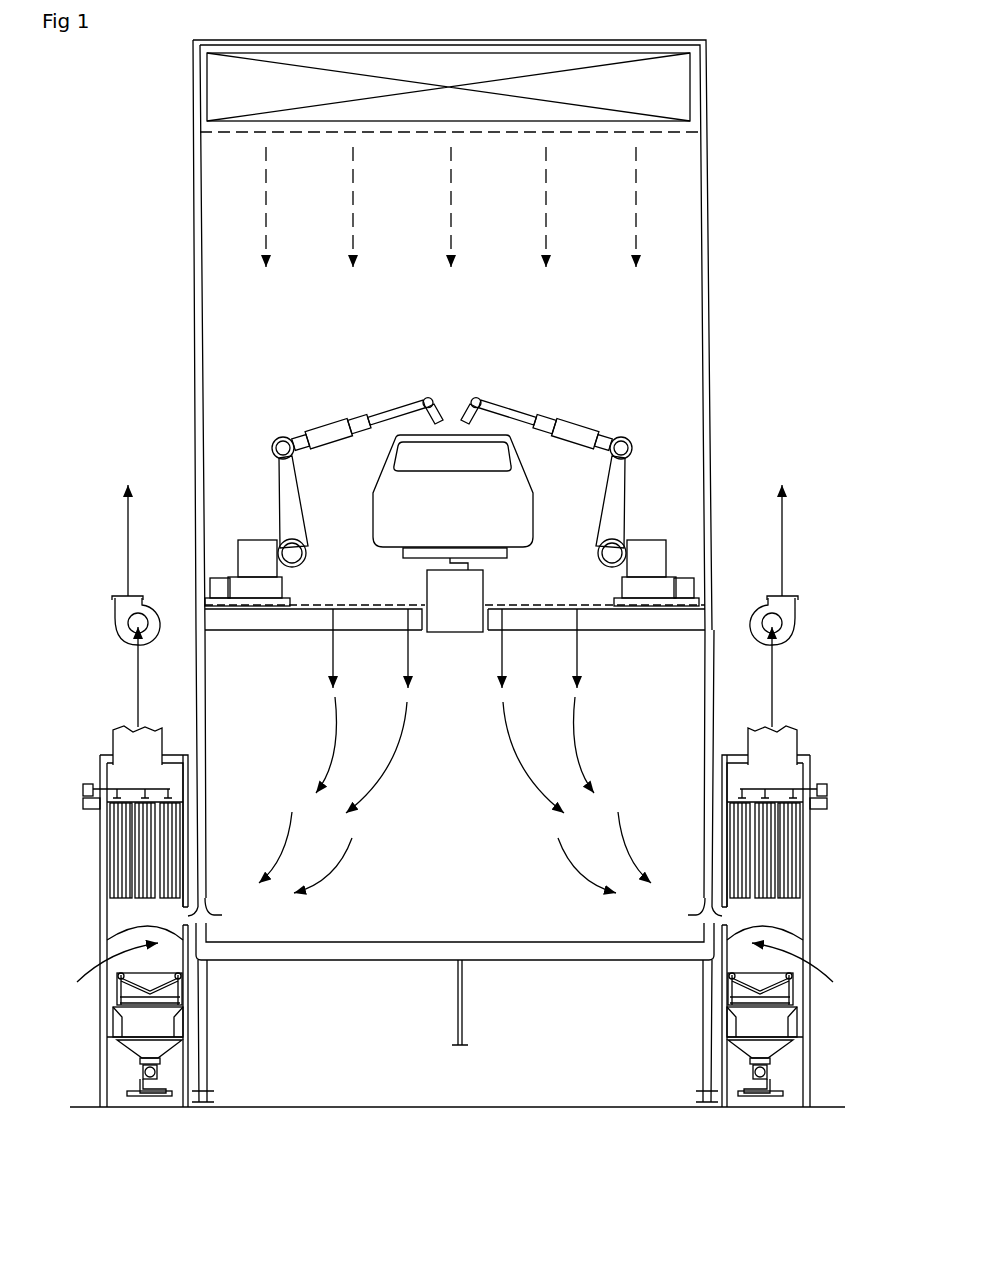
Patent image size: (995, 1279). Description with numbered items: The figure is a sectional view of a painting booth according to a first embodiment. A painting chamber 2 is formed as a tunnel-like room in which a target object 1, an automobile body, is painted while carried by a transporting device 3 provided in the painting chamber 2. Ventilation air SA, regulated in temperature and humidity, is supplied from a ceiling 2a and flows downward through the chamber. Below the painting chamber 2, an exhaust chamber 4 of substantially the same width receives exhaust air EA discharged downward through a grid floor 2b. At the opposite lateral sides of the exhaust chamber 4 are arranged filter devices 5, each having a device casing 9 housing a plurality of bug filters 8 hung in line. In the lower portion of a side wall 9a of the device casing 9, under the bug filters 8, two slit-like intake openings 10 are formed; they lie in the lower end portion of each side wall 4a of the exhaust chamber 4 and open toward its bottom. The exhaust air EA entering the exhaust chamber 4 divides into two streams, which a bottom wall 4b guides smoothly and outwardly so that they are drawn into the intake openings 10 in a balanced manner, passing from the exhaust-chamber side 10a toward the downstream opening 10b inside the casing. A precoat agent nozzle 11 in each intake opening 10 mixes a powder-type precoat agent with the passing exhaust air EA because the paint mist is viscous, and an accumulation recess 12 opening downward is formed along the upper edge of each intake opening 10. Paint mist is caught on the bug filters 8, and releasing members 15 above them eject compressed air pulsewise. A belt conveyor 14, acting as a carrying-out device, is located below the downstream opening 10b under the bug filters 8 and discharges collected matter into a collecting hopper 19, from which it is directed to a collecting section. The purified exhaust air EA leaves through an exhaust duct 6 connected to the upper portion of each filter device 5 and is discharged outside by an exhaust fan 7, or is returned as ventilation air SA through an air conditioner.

The target object 1 is at (515, 497).
The painting chamber 2 is at (458, 329).
The ceiling 2a is at (567, 134).
The grid floor 2b is at (380, 607).
The transporting device 3 is at (477, 588).
The exhaust chamber 4 is at (458, 771).
The side wall of the exhaust chamber 4a is at (205, 713).
The bottom wall of the exhaust chamber 4b is at (461, 941).
The filter device 5 is at (94, 758).
The exhaust duct 6 is at (157, 742).
The exhaust fan 7 is at (115, 622).
The bug filter 8 is at (147, 887).
The device casing 9 is at (102, 840).
The side wall of the device casing 9a is at (205, 826).
The intake opening 10 is at (455, 916).
The upstream opening of the intake opening 10a is at (215, 922).
The downstream opening of the intake opening 10b is at (459, 992).
The precoat agent nozzle 11 is at (170, 938).
The accumulation recess 12 is at (212, 912).
The belt conveyor 14 is at (180, 983).
The releasing member 15 is at (127, 786).
The collecting hopper 19 is at (162, 1017).
The ventilation air SA is at (545, 212).
The exhaust air EA is at (333, 652).